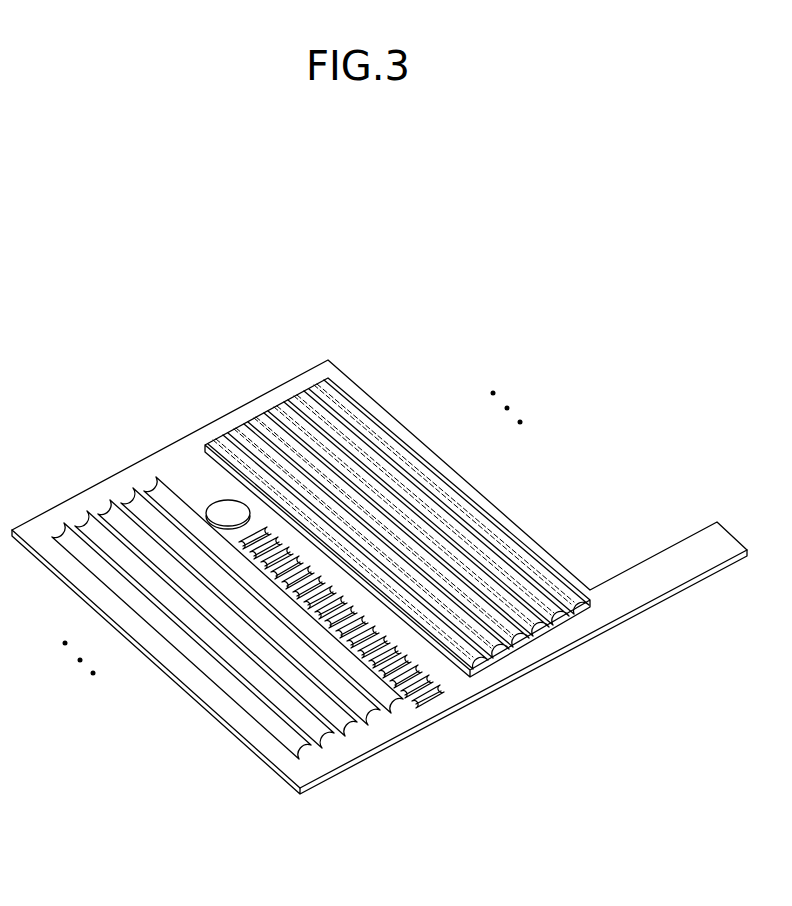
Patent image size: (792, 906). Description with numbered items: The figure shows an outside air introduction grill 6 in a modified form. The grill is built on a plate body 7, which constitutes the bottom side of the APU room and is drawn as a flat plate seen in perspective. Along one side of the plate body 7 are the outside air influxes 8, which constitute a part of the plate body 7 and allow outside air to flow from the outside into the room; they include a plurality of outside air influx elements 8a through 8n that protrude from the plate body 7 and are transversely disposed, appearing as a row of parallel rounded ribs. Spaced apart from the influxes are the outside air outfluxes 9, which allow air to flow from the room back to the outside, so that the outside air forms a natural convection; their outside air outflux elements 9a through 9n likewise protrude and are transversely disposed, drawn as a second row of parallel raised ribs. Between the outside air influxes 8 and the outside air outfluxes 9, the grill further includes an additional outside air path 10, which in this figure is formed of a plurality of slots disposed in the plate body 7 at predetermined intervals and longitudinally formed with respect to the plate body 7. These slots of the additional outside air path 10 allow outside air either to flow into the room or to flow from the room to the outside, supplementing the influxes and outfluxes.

The outside air introduction grill 6 is at (168, 348).
The plate body 7 is at (182, 473).
The outside air influxes 8 is at (123, 506).
The outside air influx element 8a is at (273, 607).
The outside air influx element 8n is at (110, 580).
The outside air outfluxes 9 is at (247, 423).
The outside air outflux element 9a is at (283, 490).
The outside air outflux element 9n is at (450, 497).
The additional outside air path 10 is at (447, 692).